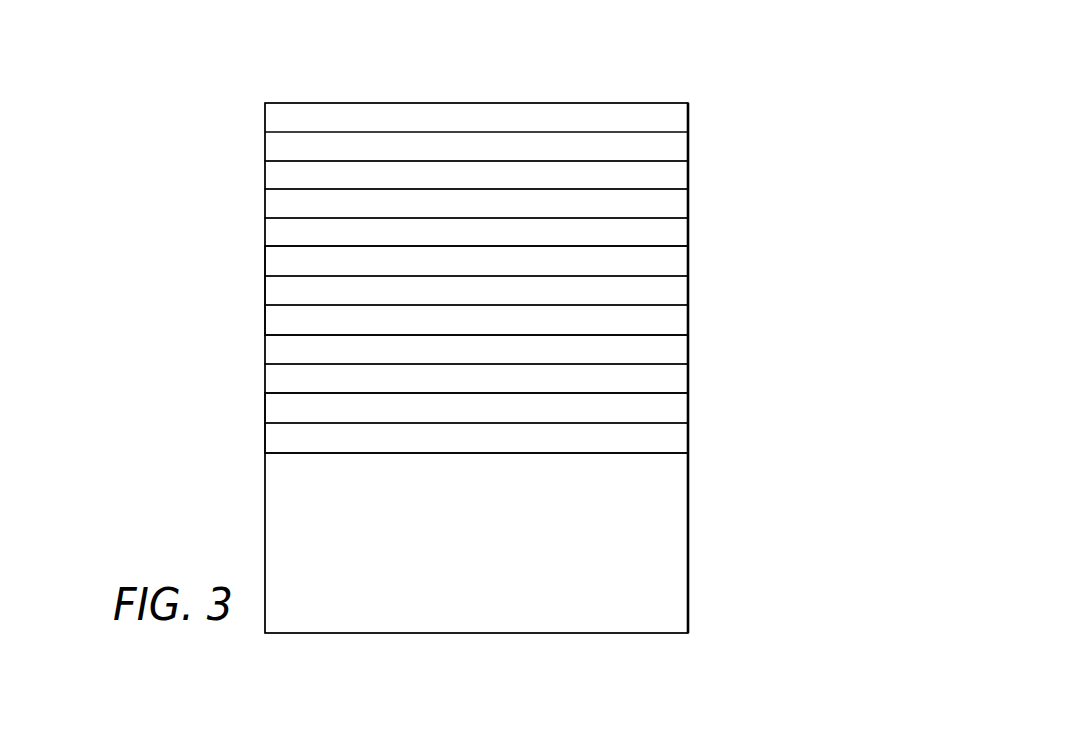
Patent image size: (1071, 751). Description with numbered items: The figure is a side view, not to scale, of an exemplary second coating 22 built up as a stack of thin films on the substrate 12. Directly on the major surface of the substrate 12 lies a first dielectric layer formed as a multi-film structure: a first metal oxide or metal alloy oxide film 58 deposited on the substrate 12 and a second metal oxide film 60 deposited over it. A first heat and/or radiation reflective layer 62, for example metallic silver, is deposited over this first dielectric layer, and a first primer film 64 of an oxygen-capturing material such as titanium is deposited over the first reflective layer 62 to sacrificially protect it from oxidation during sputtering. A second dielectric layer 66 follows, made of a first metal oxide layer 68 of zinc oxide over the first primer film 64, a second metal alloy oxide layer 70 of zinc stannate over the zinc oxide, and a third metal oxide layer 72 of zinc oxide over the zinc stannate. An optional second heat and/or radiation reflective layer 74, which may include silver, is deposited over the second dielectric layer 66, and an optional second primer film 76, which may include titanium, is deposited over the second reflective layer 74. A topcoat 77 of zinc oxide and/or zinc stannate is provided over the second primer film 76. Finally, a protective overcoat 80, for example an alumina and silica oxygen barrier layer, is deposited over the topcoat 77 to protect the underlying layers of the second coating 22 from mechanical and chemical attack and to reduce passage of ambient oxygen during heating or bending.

The second coating 22 is at (718, 81).
The protective overcoat 80 is at (260, 103).
The topcoat 77 is at (680, 177).
The second primer film 76 is at (680, 207).
The second heat and/or radiation reflective layer 74 is at (680, 235).
The third metal oxide layer 72 is at (678, 264).
The second metal alloy oxide layer 70 is at (678, 294).
The first metal oxide layer 68 is at (680, 322).
The second dielectric layer 66 is at (260, 248).
The first primer film 64 is at (680, 350).
The first heat and/or radiation reflective layer 62 is at (678, 378).
The second metal oxide film 60 is at (680, 410).
The first metal oxide or metal alloy oxide film 58 is at (680, 440).
The substrate 12 is at (672, 552).